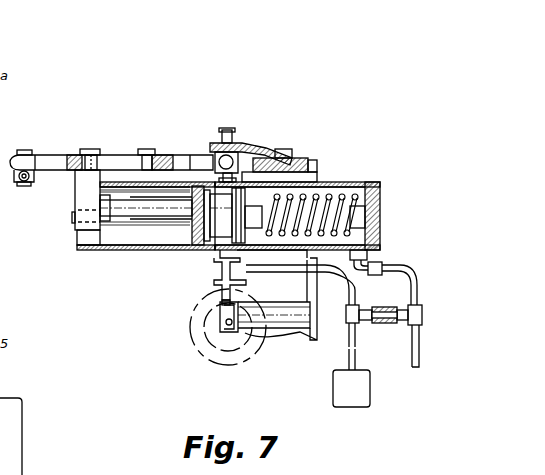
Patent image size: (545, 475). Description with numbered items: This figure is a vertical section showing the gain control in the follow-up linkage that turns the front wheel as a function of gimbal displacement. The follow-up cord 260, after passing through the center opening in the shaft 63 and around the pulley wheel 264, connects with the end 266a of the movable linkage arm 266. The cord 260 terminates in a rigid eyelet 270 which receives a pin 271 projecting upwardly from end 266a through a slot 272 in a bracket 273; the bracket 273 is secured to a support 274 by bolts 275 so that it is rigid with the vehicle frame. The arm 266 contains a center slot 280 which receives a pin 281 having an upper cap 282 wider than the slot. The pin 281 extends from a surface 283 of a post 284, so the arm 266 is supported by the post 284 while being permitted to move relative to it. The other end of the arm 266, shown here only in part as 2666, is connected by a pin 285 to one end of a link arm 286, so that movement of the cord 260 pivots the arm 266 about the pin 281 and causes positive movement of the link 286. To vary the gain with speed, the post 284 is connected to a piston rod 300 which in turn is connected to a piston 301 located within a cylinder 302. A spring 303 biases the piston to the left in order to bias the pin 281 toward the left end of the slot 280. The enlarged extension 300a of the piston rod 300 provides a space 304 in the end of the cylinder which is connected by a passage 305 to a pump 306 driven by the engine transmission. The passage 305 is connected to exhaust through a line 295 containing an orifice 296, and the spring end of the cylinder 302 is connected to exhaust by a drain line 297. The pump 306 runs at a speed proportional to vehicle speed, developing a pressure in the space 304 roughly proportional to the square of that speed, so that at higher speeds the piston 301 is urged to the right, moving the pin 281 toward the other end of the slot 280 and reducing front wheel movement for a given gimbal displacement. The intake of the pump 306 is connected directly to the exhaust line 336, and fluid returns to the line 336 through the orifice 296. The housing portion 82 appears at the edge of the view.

The shaft 63 is at (240, 355).
The housing 82 is at (0, 452).
The follow-up cord 260 is at (222, 285).
The pulley wheel 264 is at (227, 318).
The movable linkage arm 266 is at (166, 148).
The end of linkage arm 266a is at (206, 160).
The arm portion 2666 is at (39, 156).
The rigid eyelet 270 is at (243, 143).
The pin 271 is at (227, 139).
The slot 272 is at (223, 140).
The bracket 273 is at (263, 160).
The support 274 is at (325, 181).
The bolts 275 is at (297, 171).
The center slot 280 is at (115, 160).
The pin 281 is at (82, 157).
The upper cap 282 is at (97, 153).
The surface 283 is at (103, 172).
The post 284 is at (82, 198).
The pin 285 is at (25, 152).
The link arm 286 is at (37, 173).
The exhaust line 295 is at (385, 307).
The orifice 296 is at (383, 323).
The drain line 297 is at (420, 271).
The piston rod 300 is at (118, 215).
The enlarged extension 300a is at (195, 247).
The piston 301 is at (200, 219).
The cylinder 302 is at (340, 182).
The spring 303 is at (367, 182).
The space 304 is at (206, 242).
The passage 305 is at (300, 272).
The pump 306 is at (355, 407).
The exhaust line 336 is at (418, 362).